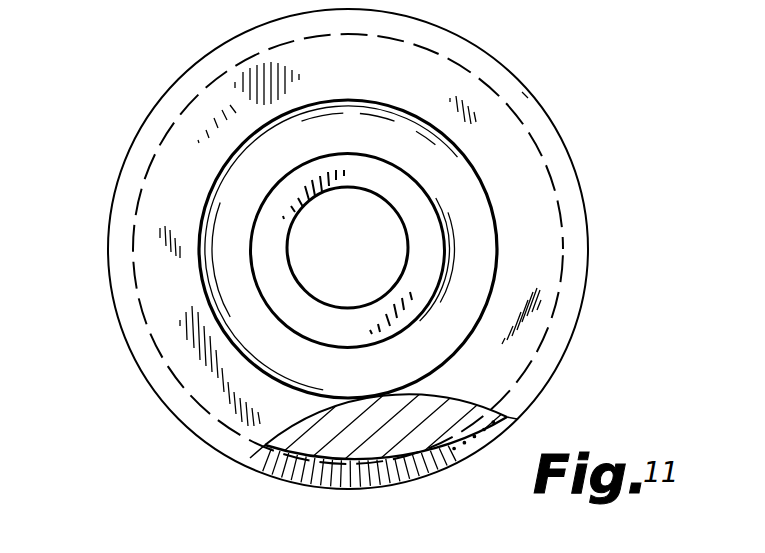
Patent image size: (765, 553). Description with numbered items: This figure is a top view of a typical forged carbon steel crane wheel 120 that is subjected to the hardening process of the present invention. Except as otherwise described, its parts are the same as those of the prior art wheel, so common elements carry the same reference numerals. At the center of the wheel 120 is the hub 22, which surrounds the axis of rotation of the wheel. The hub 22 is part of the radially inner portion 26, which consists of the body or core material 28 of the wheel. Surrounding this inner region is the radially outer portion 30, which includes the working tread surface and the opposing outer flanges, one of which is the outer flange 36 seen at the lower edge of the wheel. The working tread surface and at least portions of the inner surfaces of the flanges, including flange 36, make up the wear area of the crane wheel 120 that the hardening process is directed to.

The crane wheel 120 is at (578, 56).
The radially outer portion 30 is at (175, 93).
The radially inner portion 26 is at (163, 212).
The body or core material 28 is at (394, 380).
The hub 22 is at (312, 199).
The outer flange 36 is at (350, 490).